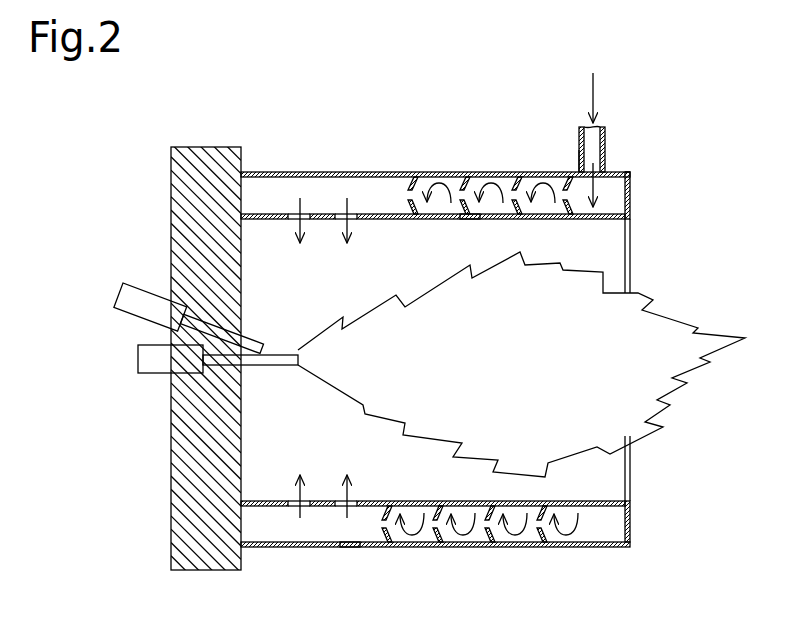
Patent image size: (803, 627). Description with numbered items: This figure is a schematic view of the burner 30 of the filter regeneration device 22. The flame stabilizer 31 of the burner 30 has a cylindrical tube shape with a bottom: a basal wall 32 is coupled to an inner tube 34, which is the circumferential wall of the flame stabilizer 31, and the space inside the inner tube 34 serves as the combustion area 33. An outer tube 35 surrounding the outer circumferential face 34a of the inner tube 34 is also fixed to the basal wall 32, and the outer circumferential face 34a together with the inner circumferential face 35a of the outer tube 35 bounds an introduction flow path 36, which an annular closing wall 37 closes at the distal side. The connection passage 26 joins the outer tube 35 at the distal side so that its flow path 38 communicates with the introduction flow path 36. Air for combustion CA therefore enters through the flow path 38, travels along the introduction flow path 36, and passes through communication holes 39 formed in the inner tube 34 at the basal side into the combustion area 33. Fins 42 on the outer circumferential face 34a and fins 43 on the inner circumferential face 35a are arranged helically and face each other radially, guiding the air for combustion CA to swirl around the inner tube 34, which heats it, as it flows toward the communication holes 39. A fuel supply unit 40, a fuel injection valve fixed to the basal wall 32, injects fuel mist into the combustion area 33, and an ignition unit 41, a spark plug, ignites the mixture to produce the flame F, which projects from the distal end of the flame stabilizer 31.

The filter regeneration device 22 is at (656, 164).
The connection passage 26 is at (606, 137).
The burner 30 is at (634, 204).
The flame stabilizer 31 is at (603, 219).
The basal wall 32 is at (177, 217).
The combustion area 33 is at (622, 473).
The inner tube 34 is at (268, 220).
The outer circumferential face 34a is at (478, 222).
The outer tube 35 is at (300, 548).
The inner circumferential face 35a is at (355, 547).
The introduction flow path 36 is at (622, 207).
The closing wall 37 is at (633, 522).
The flow path 38 is at (579, 147).
The communication holes 39 is at (298, 210).
The fuel supply unit 40 is at (138, 358).
The ignition unit 41 is at (120, 296).
The fins 42 is at (398, 226).
The fins 43 is at (432, 547).
The air for combustion CA is at (598, 88).
The flame F is at (689, 322).